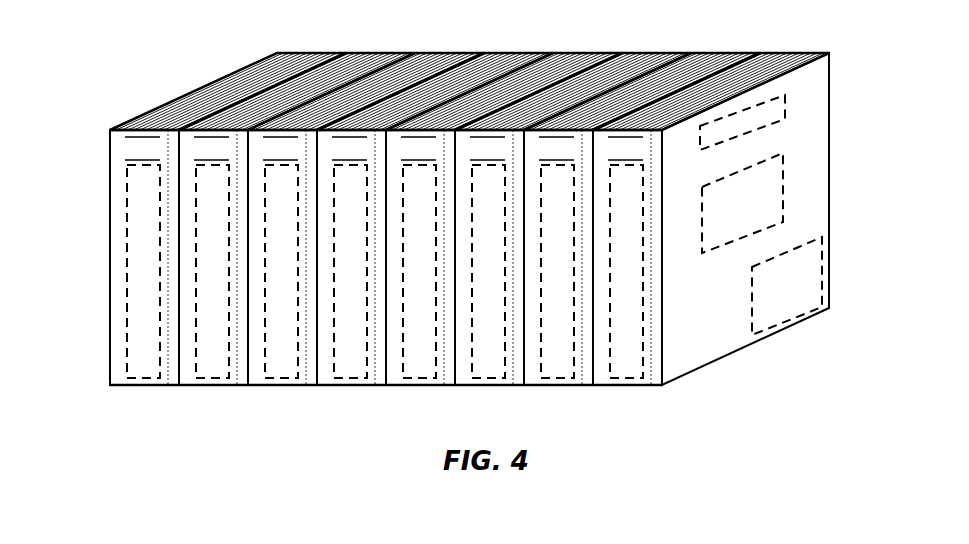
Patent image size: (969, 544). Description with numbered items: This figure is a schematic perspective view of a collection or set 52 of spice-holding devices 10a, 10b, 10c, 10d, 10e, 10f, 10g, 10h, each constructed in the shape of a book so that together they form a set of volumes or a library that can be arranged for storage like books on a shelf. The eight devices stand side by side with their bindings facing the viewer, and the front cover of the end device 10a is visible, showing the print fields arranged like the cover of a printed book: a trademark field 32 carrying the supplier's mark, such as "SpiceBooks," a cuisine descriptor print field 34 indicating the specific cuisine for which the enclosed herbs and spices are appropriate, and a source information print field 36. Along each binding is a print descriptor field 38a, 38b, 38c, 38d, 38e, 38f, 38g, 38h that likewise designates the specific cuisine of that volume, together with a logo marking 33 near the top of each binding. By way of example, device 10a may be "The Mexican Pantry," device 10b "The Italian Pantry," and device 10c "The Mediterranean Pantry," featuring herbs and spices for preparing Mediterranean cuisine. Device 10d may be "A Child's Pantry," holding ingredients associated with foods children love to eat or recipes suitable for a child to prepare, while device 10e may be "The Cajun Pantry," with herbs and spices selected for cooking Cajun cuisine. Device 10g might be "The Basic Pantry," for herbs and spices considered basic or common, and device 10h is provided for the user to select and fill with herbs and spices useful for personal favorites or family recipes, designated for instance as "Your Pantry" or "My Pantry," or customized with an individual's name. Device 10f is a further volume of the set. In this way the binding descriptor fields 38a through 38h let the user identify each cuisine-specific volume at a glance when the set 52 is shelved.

The set of spice books 52 is at (210, 67).
The spice-holding device 10a is at (741, 223).
The spice-holding device 10b is at (654, 223).
The spice-holding device 10c is at (583, 223).
The spice-holding device 10d is at (514, 223).
The spice-holding device 10e is at (420, 223).
The spice-holding device 10f is at (353, 223).
The spice-holding device 10g is at (279, 223).
The spice-holding device 10h is at (201, 223).
The spine logo indicia 33 is at (127, 137).
The trademark field 32 is at (790, 98).
The cuisine descriptor print field 34 is at (783, 174).
The source information print field 36 is at (752, 303).
The binding descriptor field 38a is at (626, 377).
The binding descriptor field 38b is at (557, 377).
The binding descriptor field 38c is at (488, 377).
The binding descriptor field 38d is at (419, 377).
The binding descriptor field 38e is at (350, 377).
The binding descriptor field 38f is at (281, 377).
The binding descriptor field 38g is at (212, 377).
The binding descriptor field 38h is at (143, 377).